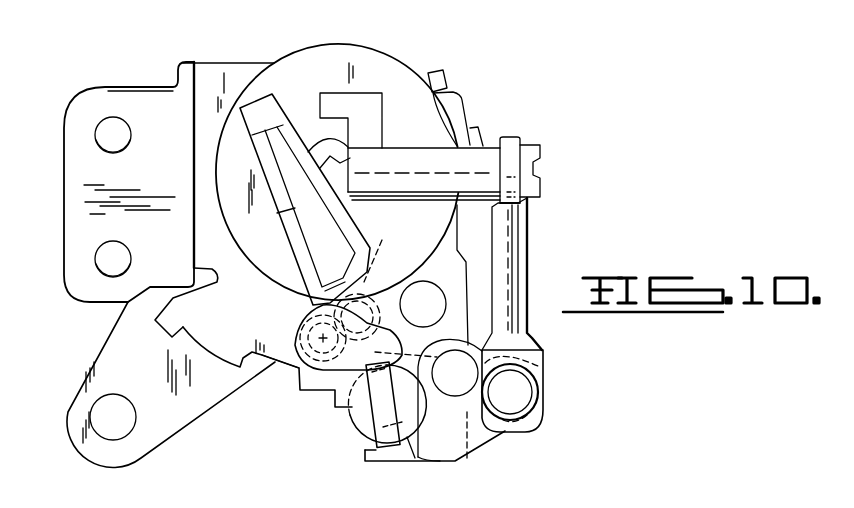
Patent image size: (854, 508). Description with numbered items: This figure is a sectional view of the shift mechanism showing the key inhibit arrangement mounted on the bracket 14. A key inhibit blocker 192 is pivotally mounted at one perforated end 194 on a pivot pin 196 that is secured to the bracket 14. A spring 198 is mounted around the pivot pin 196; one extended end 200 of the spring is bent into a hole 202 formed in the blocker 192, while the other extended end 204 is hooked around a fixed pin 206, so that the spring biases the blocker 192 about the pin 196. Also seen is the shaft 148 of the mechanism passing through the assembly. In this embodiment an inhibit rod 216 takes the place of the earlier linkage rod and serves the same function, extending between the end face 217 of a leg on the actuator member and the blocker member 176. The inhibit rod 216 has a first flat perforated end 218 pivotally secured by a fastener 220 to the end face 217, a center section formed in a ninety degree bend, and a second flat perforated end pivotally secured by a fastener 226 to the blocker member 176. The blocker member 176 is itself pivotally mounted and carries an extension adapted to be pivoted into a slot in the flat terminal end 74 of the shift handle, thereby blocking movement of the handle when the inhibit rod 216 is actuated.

The bracket 14 is at (139, 82).
The key inhibit blocker 192 is at (302, 104).
The actuating shaft 148 is at (370, 93).
The end face 217 is at (505, 137).
The first flat perforated end 218 is at (500, 160).
The fastener 220 is at (541, 166).
The inhibit rod 216 is at (532, 228).
The hole 202 is at (389, 251).
The extended end 200 is at (372, 292).
The fixed pin 206 is at (423, 304).
The extended end 204 is at (428, 400).
The perforated end 194 is at (300, 322).
The spring 198 is at (293, 337).
The pivot pin 196 is at (278, 372).
The blocker member 176 is at (367, 452).
The flat terminal end 74 is at (393, 433).
The fastener 226 is at (541, 413).